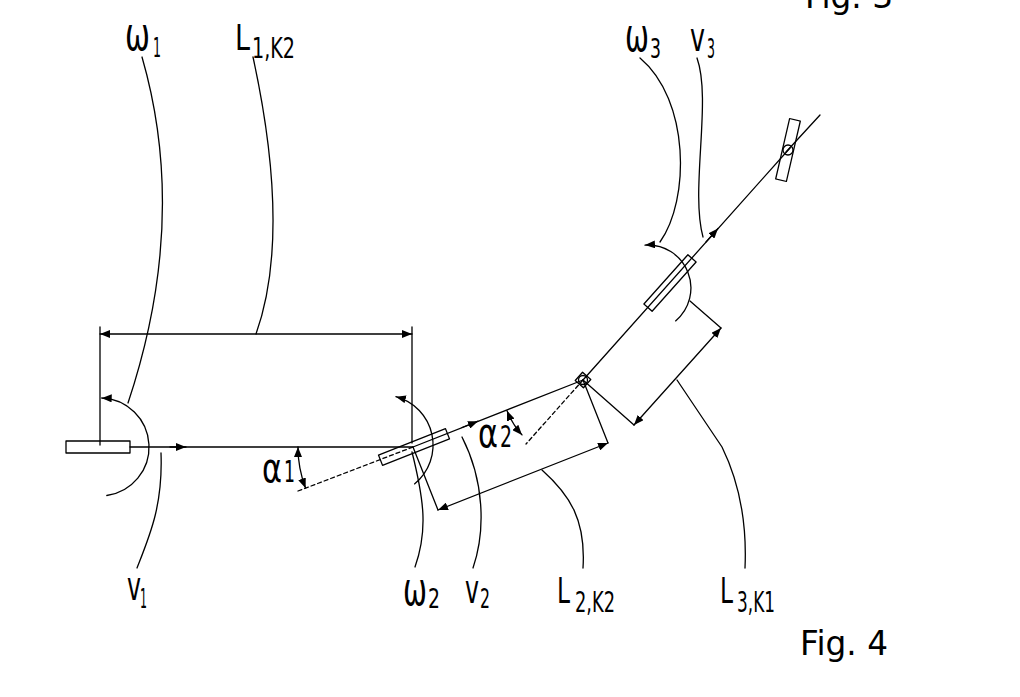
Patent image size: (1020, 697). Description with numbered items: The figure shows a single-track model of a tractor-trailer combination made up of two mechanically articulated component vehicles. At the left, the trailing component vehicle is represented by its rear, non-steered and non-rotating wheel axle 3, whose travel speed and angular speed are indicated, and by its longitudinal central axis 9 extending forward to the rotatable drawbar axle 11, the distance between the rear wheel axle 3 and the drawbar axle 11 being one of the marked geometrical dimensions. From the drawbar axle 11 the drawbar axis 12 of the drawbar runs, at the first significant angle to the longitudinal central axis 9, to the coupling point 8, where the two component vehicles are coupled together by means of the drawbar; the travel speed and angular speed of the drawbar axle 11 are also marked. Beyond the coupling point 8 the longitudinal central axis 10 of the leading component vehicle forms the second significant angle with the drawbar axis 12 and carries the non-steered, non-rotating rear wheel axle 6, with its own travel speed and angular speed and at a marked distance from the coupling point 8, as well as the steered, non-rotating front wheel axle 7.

The rear wheel axle 3 is at (77, 459).
The longitudinal central axis 9 is at (217, 452).
The drawbar axle 11 is at (420, 428).
The drawbar axis 12 is at (538, 397).
The coupling point 8 is at (582, 375).
The rear wheel axle 6 is at (650, 265).
The front wheel axle 7 is at (765, 143).
The longitudinal central axis 10 is at (745, 203).